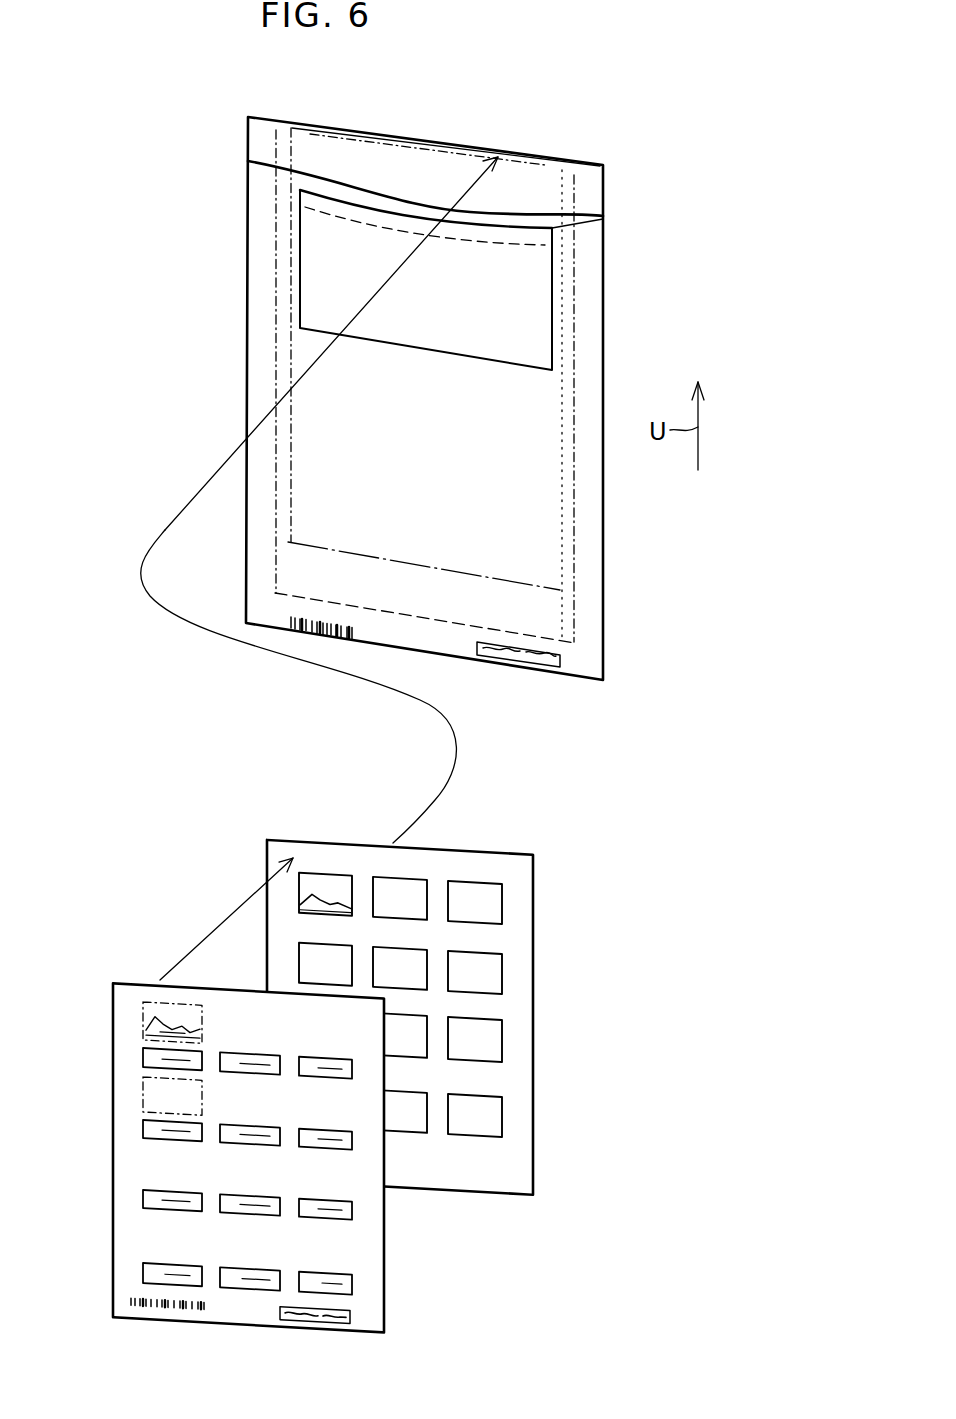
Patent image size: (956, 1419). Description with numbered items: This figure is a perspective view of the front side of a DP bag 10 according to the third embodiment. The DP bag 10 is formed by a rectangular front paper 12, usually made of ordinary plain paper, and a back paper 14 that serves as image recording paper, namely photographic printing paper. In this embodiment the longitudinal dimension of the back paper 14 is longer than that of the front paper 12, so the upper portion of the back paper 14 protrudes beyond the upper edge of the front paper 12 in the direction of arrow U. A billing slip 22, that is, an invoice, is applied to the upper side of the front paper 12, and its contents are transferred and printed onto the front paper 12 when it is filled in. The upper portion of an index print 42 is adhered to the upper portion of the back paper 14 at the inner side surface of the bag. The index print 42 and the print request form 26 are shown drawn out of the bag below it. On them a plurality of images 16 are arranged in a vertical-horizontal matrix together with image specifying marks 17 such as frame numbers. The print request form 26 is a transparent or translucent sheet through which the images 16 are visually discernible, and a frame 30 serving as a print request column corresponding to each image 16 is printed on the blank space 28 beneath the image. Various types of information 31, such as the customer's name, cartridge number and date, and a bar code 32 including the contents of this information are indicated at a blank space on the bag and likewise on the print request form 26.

The DP bag 10 is at (471, 142).
The front paper 12 is at (572, 241).
The back paper 14 is at (583, 182).
The images 16 is at (322, 876).
The image specifying marks 17 is at (313, 883).
The billing slip 22 is at (552, 295).
The print request form 26 is at (112, 1002).
The blank space 28 is at (480, 938).
The frame 30 is at (143, 1051).
The information 31 is at (562, 663).
The bar code 32 is at (362, 627).
The index print 42 is at (292, 139).